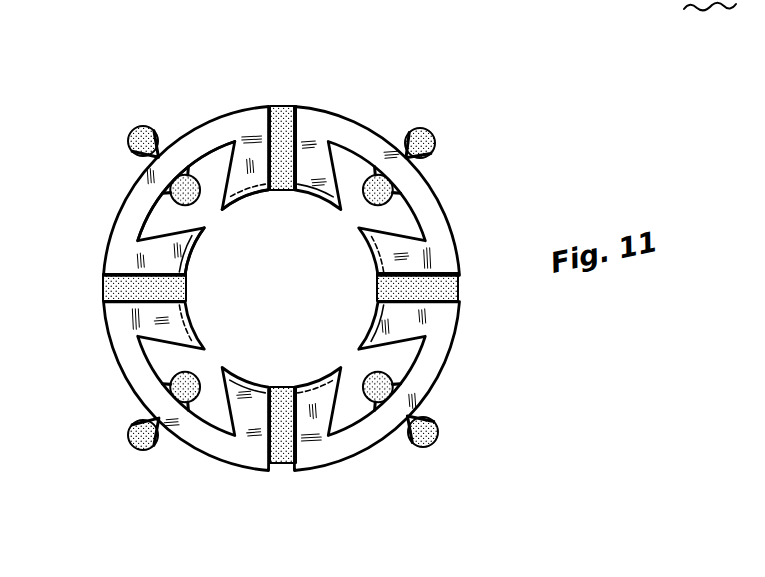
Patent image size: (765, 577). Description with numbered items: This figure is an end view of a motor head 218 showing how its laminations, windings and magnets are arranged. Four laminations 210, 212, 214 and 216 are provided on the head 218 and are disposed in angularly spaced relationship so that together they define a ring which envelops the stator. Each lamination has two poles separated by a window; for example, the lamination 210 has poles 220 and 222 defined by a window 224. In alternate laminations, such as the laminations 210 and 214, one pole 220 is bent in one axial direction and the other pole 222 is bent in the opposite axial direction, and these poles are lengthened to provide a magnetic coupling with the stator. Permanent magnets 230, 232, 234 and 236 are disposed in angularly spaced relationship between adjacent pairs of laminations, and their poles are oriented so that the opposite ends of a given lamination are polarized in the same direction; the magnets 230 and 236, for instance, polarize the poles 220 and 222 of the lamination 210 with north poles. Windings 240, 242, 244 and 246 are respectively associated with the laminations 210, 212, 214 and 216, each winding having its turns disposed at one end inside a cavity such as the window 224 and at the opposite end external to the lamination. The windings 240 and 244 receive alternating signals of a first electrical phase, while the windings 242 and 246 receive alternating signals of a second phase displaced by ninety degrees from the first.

The lamination 210 is at (115, 238).
The lamination 212 is at (215, 440).
The lamination 214 is at (343, 450).
The lamination 216 is at (423, 207).
The head 218 is at (393, 106).
The pole 220 is at (242, 193).
The pole 222 is at (198, 258).
The window 224 is at (162, 197).
The permanent magnet 230 is at (123, 282).
The permanent magnet 232 is at (255, 457).
The permanent magnet 234 is at (458, 287).
The permanent magnet 236 is at (284, 106).
The winding 240 is at (153, 133).
The winding 242 is at (130, 440).
The winding 244 is at (437, 426).
The winding 246 is at (433, 137).